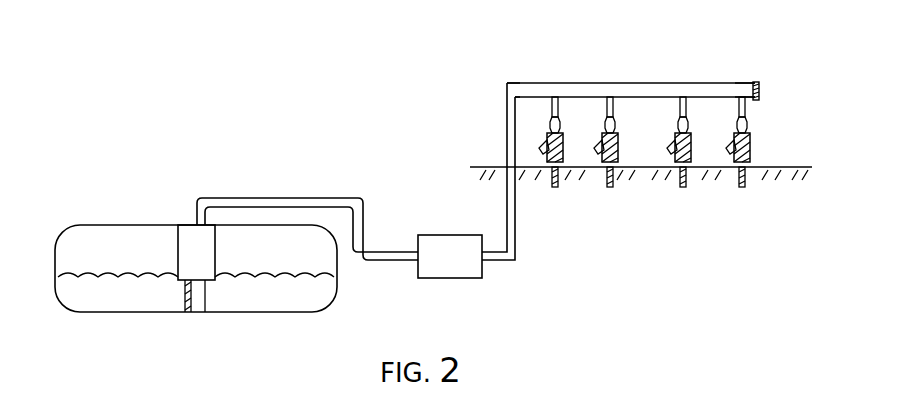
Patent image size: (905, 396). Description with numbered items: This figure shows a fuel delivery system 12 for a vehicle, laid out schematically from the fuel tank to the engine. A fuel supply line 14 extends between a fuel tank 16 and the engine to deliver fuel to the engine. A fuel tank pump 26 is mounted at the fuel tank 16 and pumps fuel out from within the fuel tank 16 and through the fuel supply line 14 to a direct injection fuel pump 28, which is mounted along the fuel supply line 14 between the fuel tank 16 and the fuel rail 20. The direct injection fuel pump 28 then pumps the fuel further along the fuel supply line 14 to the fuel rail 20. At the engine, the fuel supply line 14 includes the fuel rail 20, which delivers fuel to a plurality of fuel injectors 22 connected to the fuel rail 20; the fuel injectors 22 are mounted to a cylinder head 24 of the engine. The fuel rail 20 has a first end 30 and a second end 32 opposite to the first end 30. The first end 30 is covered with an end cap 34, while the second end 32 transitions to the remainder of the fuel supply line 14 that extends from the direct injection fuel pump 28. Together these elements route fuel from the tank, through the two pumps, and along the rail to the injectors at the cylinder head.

The fuel delivery system 12 is at (345, 104).
The fuel supply line 14 is at (522, 248).
The fuel tank 16 is at (128, 222).
The fuel rail 20 is at (656, 83).
The fuel injectors 22 is at (544, 142).
The cylinder head 24 is at (490, 166).
The fuel tank pump 26 is at (193, 235).
The direct injection fuel pump 28 is at (452, 280).
The first end 30 is at (732, 84).
The second end 32 is at (512, 84).
The end cap 34 is at (760, 90).